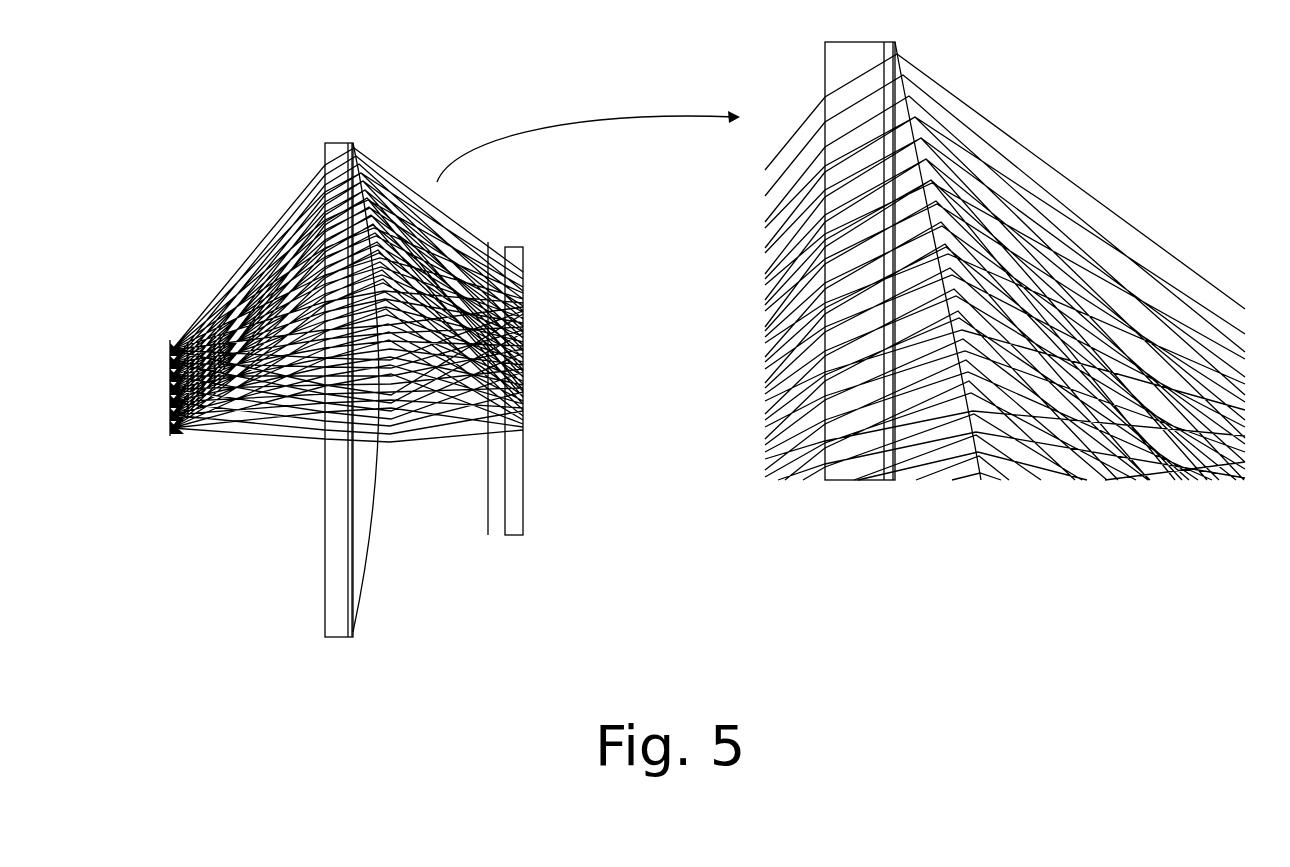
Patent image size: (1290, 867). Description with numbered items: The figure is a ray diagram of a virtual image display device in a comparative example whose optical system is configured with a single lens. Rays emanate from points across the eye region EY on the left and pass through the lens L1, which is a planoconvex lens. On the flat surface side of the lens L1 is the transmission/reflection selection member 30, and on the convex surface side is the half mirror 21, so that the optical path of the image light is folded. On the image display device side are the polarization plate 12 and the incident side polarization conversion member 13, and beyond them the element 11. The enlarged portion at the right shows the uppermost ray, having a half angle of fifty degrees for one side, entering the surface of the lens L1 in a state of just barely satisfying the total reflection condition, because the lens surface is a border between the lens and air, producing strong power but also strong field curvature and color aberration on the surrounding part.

The eye box EY is at (170, 382).
The transmission/reflection selection member 30 is at (325, 497).
The lens L1 is at (352, 575).
The half mirror 21 is at (390, 555).
The polarization plate 12 is at (527, 363).
The incident side polarization conversion member 13 is at (485, 236).
The display 11 is at (531, 298).